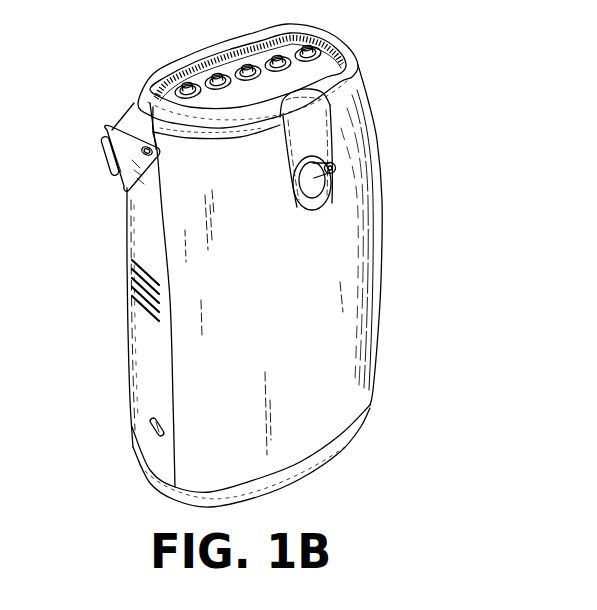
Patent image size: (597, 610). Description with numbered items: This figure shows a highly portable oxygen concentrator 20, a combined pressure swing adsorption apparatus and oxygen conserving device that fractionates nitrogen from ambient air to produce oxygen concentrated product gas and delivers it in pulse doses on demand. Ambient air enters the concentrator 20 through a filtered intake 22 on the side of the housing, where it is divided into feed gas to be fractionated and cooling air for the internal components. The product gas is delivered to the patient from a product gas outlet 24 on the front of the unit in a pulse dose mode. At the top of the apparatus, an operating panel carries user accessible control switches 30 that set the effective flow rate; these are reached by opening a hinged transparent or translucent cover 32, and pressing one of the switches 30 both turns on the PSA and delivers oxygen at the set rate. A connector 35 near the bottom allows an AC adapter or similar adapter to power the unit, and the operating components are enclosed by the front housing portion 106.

The oxygen concentrator 20 is at (388, 185).
The filtered intake 22 is at (132, 288).
The product gas outlet 24 is at (305, 178).
The control switches 30 is at (218, 77).
The cover 32 is at (347, 44).
The connector 35 is at (160, 442).
The front housing portion 106 is at (182, 247).